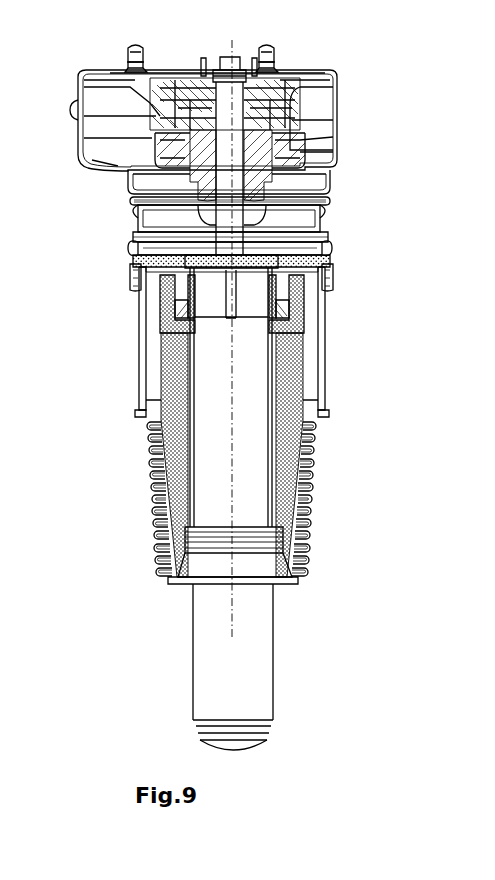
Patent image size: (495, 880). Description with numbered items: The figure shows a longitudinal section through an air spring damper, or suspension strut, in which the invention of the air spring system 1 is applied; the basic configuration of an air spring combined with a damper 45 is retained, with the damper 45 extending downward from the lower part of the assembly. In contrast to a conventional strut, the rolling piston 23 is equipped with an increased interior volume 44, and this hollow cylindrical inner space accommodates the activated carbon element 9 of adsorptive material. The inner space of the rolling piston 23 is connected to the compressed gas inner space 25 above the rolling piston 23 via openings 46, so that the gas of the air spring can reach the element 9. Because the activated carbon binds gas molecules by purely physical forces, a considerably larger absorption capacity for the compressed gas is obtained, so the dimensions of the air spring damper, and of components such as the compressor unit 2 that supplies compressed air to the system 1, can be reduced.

The air spring system 1 is at (359, 63).
The compressor unit 2 is at (338, 140).
The element of adsorptive material 9 is at (303, 383).
The rolling piston 23 is at (318, 468).
The compressed gas volume 25 is at (293, 229).
The increased interior volume 44 is at (141, 394).
The damper 45 is at (253, 667).
The openings 46 is at (318, 282).